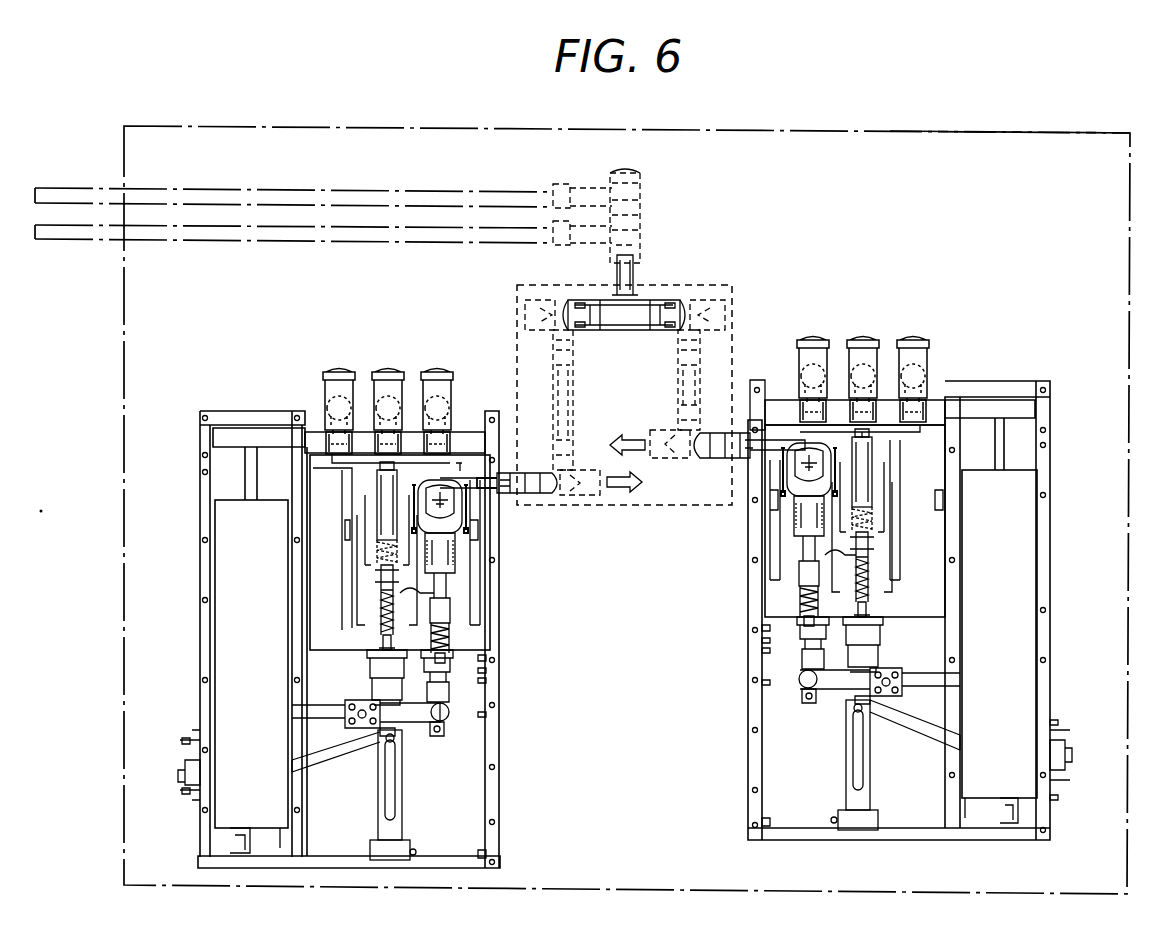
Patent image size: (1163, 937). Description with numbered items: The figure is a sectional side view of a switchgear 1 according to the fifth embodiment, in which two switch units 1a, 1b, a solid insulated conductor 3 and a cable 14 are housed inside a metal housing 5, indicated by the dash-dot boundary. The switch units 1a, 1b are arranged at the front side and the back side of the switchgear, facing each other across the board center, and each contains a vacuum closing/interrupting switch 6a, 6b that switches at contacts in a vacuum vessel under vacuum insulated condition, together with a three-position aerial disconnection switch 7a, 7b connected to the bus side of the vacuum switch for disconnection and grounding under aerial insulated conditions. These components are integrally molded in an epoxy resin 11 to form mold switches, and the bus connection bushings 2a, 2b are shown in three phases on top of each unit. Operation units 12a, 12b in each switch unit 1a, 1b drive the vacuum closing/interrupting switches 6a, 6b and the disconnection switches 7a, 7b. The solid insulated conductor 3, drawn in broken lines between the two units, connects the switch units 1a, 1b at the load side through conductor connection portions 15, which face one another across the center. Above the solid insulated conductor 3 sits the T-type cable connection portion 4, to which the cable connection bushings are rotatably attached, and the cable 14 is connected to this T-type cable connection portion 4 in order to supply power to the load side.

The switchgear 1 is at (277, 126).
The metal housing 5 is at (912, 131).
The cable 14 is at (290, 190).
The T-type cable connection portion 4 is at (644, 170).
The solid insulated conductor 3 is at (682, 288).
The conductor connection portion 15 is at (537, 492).
The switch unit 1a is at (252, 410).
The switch unit 1b is at (993, 380).
The operation unit 12a is at (220, 555).
The operation unit 12b is at (1030, 537).
The first bottle group 2a is at (458, 362).
The second bottle group 2b is at (935, 330).
The epoxy resin 11 is at (350, 528).
The three-position aerial disconnection switch 7a is at (374, 480).
The three-position aerial disconnection switch 7b is at (880, 446).
The vacuum closing/interrupting switch 6a is at (465, 548).
The vacuum closing/interrupting switch 6b is at (782, 517).